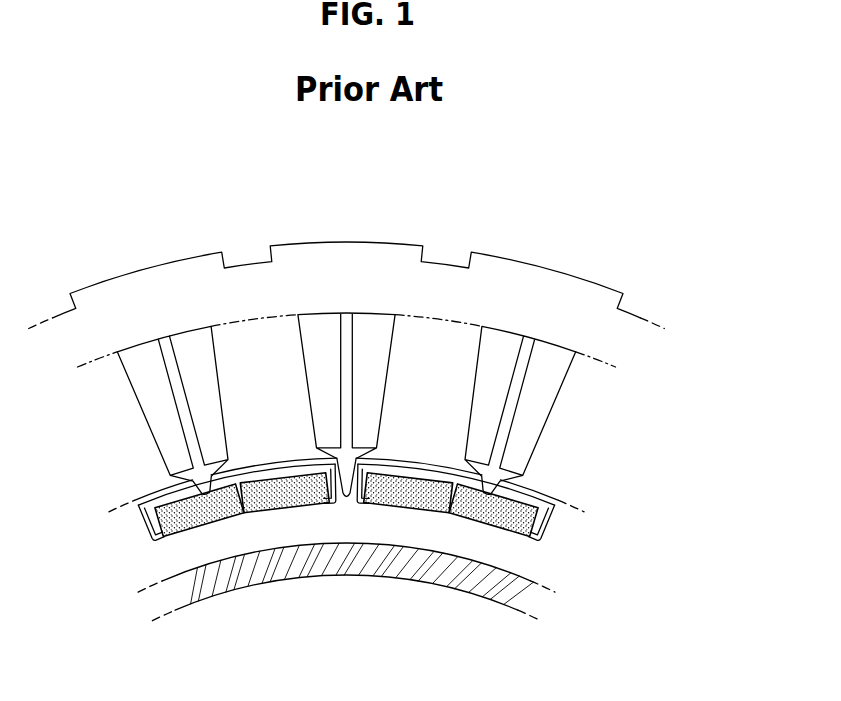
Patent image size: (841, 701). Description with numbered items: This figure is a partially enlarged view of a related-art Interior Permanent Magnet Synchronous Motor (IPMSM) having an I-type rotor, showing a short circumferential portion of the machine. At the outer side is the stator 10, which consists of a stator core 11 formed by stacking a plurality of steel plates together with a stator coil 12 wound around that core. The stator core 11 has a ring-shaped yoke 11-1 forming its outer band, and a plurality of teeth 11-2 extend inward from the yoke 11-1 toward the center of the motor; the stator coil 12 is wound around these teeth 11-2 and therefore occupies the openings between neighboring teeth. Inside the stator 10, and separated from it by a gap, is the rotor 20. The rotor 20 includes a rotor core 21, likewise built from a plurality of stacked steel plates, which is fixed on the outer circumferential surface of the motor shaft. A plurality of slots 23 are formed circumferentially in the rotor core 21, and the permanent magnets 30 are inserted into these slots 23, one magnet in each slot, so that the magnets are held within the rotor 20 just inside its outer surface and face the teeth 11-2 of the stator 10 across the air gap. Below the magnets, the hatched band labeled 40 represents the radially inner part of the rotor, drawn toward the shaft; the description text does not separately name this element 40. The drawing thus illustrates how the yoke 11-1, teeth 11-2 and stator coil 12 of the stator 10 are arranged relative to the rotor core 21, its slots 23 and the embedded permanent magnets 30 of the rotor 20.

The stator 10 is at (566, 244).
The stator core 11 is at (618, 280).
The yoke 11-1 is at (498, 273).
The teeth 11-2 is at (450, 389).
The stator coil 12 is at (318, 327).
The rotor 20 is at (578, 548).
The rotor core 21 is at (564, 500).
The slots 23 is at (172, 540).
The permanent magnets 30 is at (287, 520).
The rotor core 40 is at (445, 578).